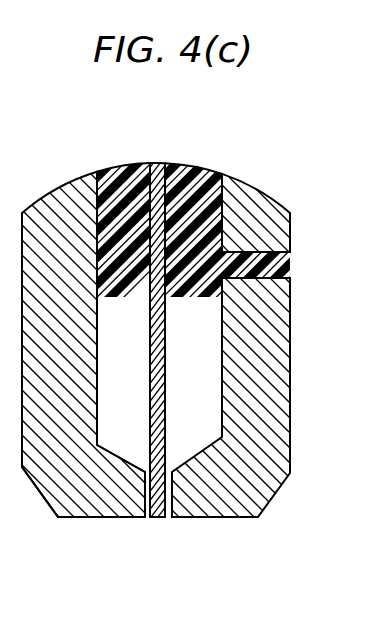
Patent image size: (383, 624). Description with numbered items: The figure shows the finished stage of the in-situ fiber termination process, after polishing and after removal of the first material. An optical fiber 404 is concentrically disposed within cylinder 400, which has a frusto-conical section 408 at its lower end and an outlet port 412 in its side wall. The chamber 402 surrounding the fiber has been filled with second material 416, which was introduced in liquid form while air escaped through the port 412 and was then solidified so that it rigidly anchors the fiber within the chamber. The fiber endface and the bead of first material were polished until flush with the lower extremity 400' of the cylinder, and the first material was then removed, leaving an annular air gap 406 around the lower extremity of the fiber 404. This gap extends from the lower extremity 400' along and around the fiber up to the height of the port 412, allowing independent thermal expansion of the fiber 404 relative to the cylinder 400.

The cylinder 400 is at (191, 312).
The lower extremity of cylinder 400' is at (83, 518).
The chamber 402 is at (120, 176).
The optical fiber 404 is at (157, 164).
The annular air gap 406 is at (148, 518).
The frusto-conical section 408 is at (270, 495).
The outlet port 412 is at (288, 256).
The second material 416 is at (195, 178).